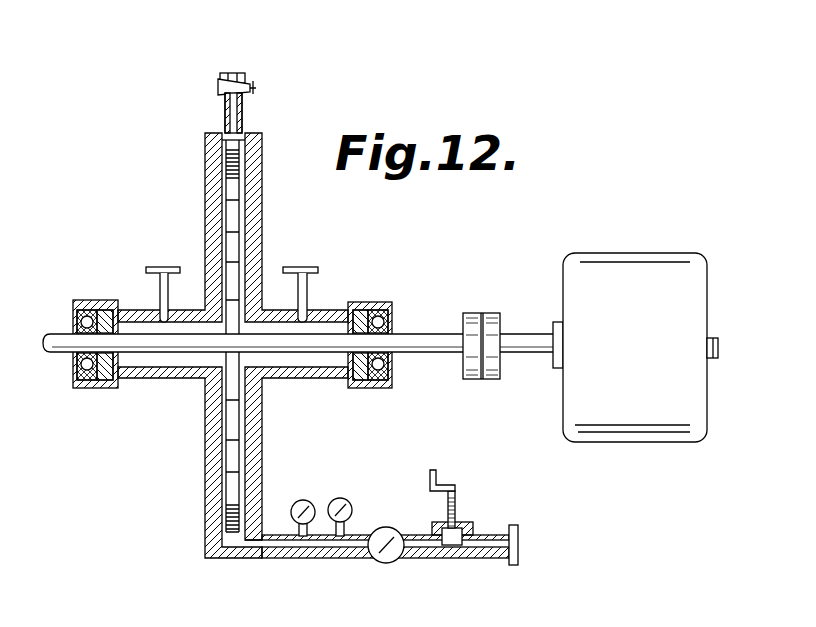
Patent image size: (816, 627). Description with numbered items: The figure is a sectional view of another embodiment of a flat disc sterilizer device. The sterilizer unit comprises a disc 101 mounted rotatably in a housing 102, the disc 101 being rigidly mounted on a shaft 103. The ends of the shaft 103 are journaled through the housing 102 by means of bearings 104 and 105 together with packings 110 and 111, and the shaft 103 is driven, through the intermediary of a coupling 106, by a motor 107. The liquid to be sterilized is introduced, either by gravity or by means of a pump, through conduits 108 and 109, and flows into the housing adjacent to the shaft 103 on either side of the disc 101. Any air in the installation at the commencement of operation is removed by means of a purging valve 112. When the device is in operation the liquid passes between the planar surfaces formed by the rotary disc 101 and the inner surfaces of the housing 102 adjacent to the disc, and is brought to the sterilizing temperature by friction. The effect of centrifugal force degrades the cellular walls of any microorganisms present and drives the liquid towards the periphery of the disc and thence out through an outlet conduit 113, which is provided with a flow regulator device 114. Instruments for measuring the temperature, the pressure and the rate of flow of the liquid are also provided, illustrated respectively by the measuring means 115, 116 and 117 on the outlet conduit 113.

The disc 101 is at (233, 462).
The housing 102 is at (213, 497).
The shaft 103 is at (271, 343).
The bearing 104 is at (82, 364).
The bearing 105 is at (392, 326).
The coupling 106 is at (488, 378).
The motor 107 is at (596, 425).
The conduit 108 is at (157, 292).
The conduit 109 is at (308, 296).
The packing 110 is at (110, 364).
The packing 111 is at (362, 322).
The purging valve 112 is at (254, 86).
The outlet conduit 113 is at (263, 547).
The flow regulator device 114 is at (458, 537).
The temperature measuring instrument 115 is at (299, 500).
The pressure measuring instrument 116 is at (341, 497).
The flow rate measuring instrument 117 is at (393, 560).